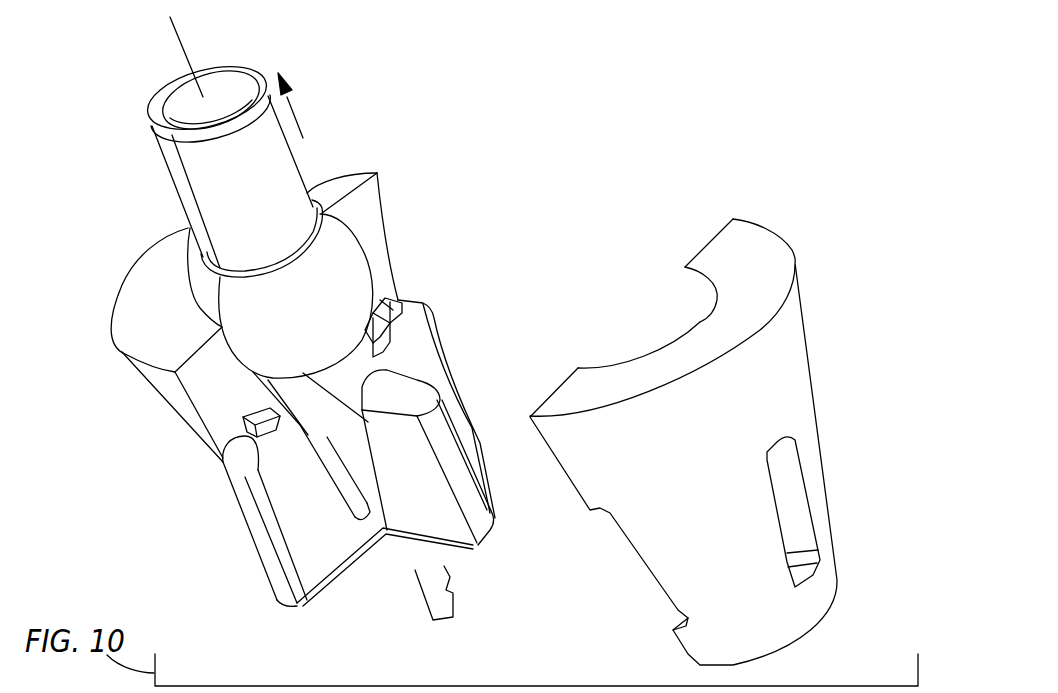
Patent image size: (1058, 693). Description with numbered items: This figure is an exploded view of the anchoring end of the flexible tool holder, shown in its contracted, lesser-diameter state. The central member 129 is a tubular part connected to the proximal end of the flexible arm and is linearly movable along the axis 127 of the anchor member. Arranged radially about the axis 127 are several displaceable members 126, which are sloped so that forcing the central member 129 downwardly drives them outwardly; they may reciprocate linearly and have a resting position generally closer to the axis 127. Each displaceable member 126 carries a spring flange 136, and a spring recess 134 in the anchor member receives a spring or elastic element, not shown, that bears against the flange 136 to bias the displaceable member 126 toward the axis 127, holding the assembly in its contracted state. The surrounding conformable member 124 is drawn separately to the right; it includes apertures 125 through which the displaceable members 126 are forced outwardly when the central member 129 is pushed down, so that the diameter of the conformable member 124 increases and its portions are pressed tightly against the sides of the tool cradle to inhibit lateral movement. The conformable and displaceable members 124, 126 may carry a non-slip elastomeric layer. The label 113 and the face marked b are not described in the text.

The tube opening 113 is at (227, 65).
The conformable member 124 is at (365, 163).
The aperture 125 is at (803, 487).
The displaceable member 126 is at (458, 398).
The axis 127 is at (175, 33).
The central member 129 is at (180, 187).
The spring recess 134 is at (382, 302).
The spring flange 136 is at (412, 331).
The face b is at (367, 257).